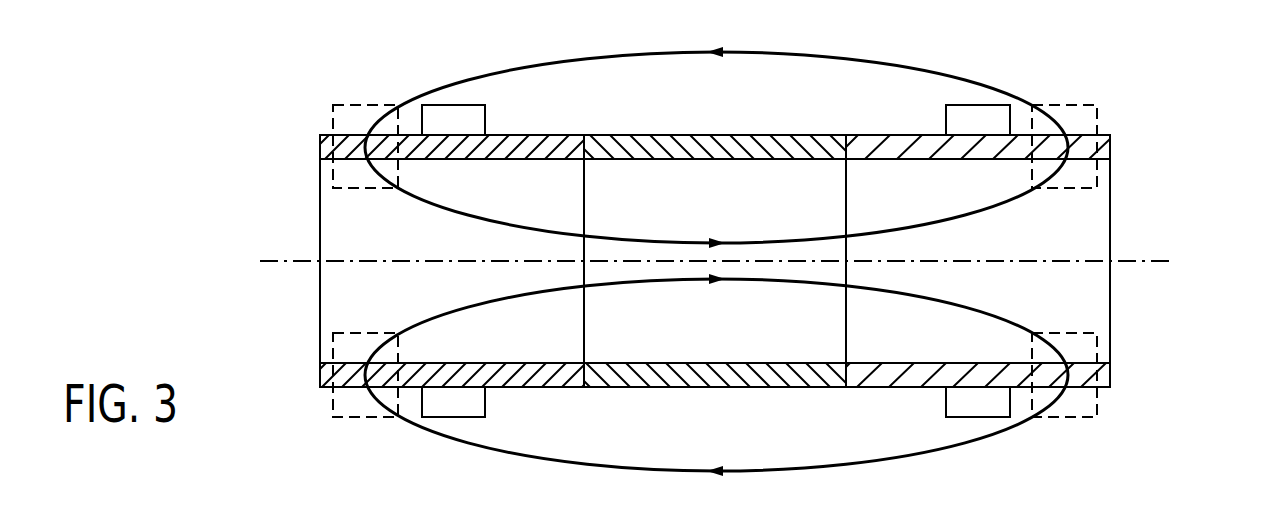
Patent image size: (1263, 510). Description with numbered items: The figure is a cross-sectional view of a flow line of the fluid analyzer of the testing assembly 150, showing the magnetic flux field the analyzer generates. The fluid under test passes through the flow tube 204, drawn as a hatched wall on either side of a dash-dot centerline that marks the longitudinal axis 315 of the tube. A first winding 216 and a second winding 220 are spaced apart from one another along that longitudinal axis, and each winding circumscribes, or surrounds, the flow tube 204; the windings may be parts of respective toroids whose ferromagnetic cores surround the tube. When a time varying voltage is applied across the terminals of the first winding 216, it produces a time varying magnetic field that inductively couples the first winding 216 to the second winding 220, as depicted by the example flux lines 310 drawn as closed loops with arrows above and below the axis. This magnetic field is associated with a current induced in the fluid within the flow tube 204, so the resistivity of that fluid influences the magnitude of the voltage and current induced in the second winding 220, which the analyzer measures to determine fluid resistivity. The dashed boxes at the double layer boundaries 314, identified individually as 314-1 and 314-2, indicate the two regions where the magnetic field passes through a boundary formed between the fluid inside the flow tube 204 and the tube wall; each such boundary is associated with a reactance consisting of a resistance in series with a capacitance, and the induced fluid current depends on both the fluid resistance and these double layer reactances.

The testing assembly 150 is at (1077, 57).
The flow tube 204 is at (715, 135).
The first winding 216 is at (486, 117).
The second winding 220 is at (945, 117).
The flux lines 310 is at (945, 73).
The double layer boundary 314 is at (355, 418).
The double layer boundary 314-1 is at (356, 105).
The double layer boundary 314-2 is at (1075, 105).
The central axis 315 is at (1135, 261).